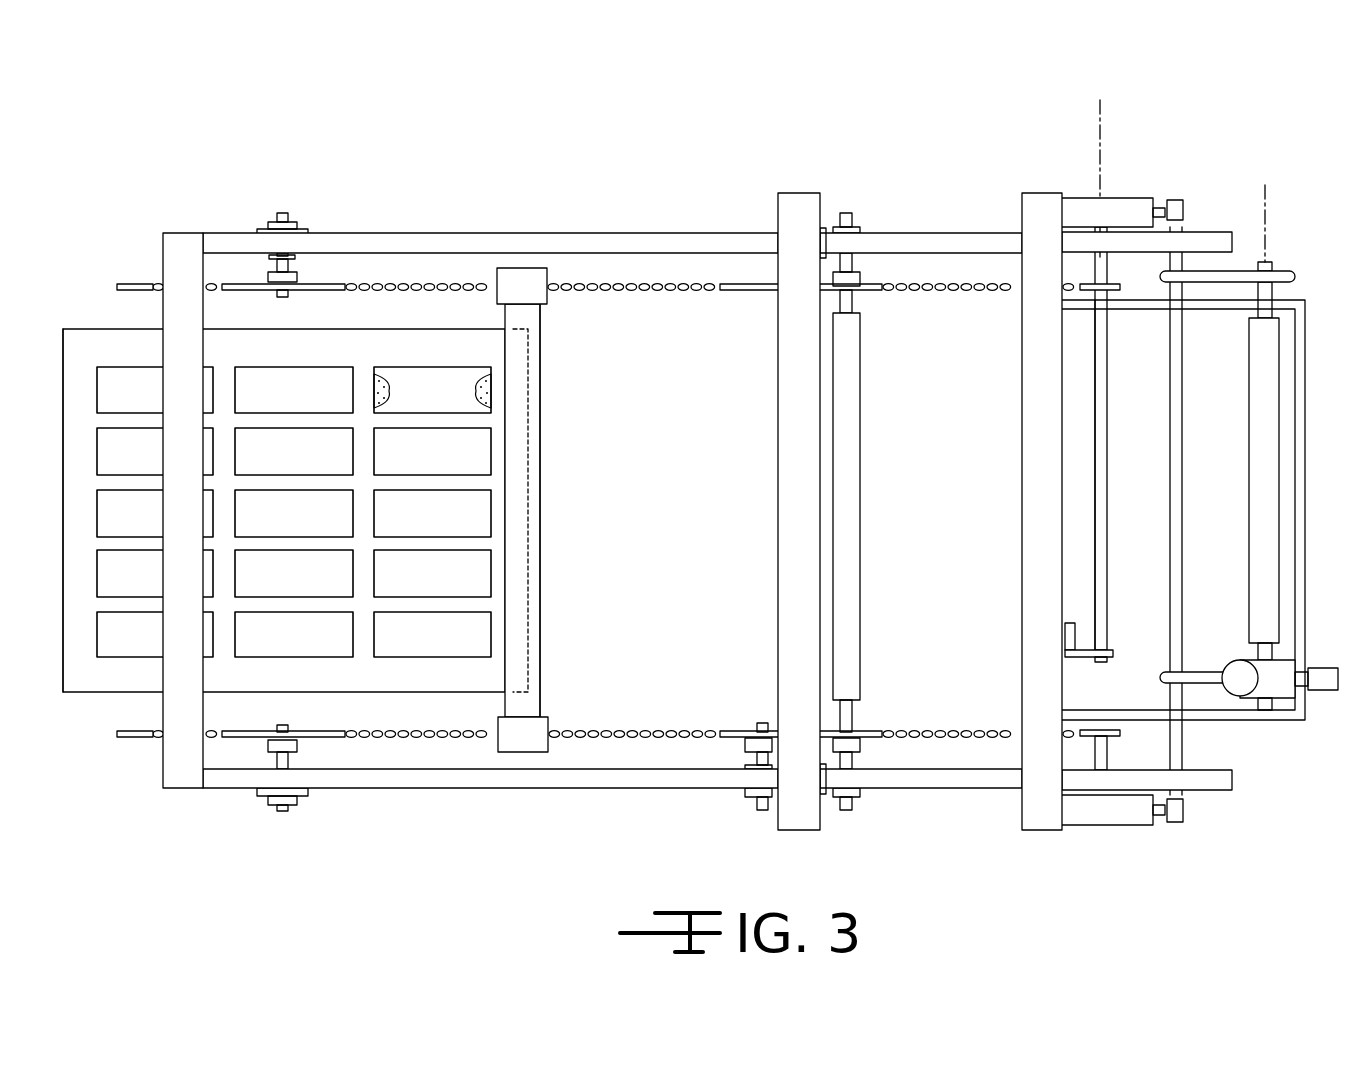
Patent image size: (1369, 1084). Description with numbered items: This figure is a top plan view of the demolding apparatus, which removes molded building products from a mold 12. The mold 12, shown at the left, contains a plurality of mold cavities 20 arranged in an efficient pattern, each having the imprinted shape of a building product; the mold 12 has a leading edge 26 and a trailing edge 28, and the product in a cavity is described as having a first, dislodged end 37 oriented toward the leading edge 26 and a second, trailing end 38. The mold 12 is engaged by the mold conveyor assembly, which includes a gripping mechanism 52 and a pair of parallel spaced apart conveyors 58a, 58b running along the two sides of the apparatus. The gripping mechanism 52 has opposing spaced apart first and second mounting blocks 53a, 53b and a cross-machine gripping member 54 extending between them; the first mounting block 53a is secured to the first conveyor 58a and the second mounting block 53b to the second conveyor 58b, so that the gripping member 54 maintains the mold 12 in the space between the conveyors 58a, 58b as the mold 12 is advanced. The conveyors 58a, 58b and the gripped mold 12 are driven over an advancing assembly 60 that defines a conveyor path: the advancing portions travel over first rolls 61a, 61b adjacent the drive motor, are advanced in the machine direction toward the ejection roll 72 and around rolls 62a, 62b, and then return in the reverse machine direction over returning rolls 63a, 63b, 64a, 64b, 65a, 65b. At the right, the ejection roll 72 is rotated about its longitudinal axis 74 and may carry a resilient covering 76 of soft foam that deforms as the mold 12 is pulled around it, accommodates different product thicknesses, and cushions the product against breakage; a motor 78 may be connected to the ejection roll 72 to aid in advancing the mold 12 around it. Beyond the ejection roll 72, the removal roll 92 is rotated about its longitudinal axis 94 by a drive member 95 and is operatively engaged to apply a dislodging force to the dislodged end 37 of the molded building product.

The mold 12 is at (100, 322).
The mold cavity 20 is at (118, 640).
The leading edge 26 is at (530, 490).
The trailing edge 28 is at (62, 410).
The dislodged end 37 is at (488, 383).
The trailing end 38 is at (378, 383).
The gripping mechanism 52 is at (540, 378).
The first mounting block 53a is at (520, 752).
The second mounting block 53b is at (522, 268).
The cross-machine gripping member 54 is at (540, 580).
The first conveyor 58a is at (596, 733).
The second conveyor 58b is at (575, 285).
The advancing assembly 60 is at (281, 213).
The first roll 61a is at (135, 740).
The first roll 61b is at (135, 283).
The roll 62a is at (1088, 738).
The roll 62b is at (1090, 284).
The returning roll 63a is at (863, 733).
The returning roll 63b is at (880, 285).
The returning roll 64a is at (722, 733).
The returning roll 64b is at (738, 292).
The returning roll 65a is at (325, 732).
The returning roll 65b is at (305, 297).
The ejection roll 72 is at (1108, 460).
The longitudinal axis 74 is at (1104, 170).
The resilient covering 76 is at (1104, 410).
The motor 78 is at (1137, 196).
The removal roll 92 is at (1285, 440).
The longitudinal axis 94 is at (1268, 225).
The drive member 95 is at (1275, 705).